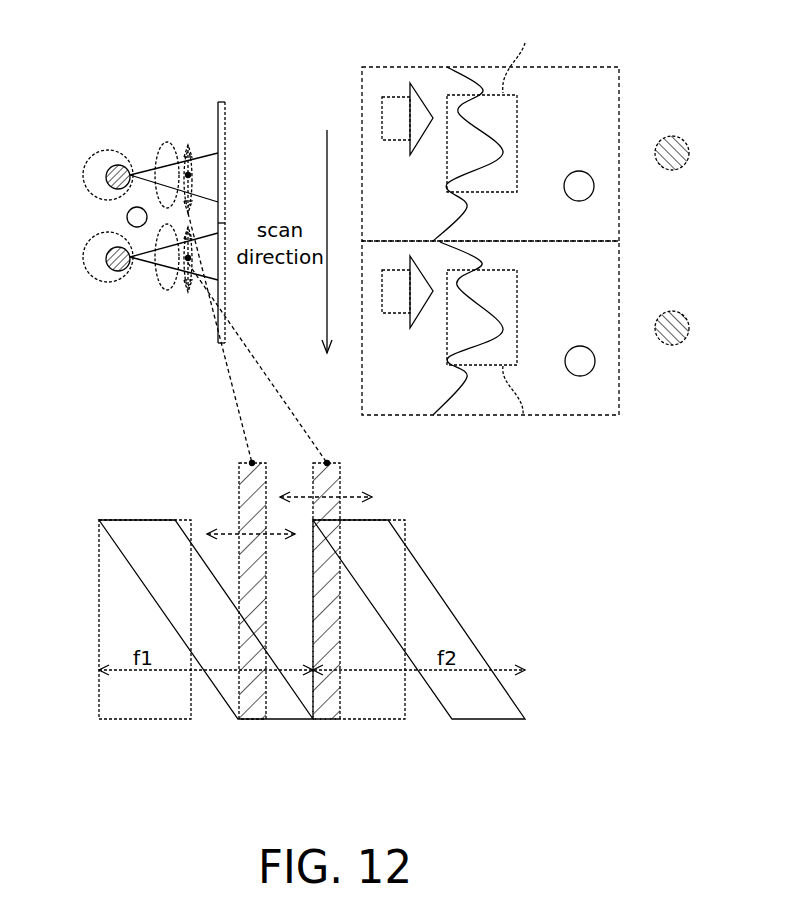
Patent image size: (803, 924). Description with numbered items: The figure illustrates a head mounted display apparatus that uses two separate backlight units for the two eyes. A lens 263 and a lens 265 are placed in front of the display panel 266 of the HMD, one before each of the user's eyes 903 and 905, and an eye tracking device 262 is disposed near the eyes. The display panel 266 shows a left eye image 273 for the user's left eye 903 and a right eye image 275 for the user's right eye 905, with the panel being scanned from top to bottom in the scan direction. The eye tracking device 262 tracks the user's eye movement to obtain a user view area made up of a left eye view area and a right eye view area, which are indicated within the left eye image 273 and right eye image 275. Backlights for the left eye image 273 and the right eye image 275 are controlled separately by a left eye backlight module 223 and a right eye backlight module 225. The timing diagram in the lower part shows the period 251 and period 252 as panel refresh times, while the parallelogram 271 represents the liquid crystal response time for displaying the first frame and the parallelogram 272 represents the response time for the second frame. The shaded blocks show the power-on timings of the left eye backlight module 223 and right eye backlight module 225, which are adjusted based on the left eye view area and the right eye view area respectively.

The left eye 903 is at (90, 157).
The right eye 905 is at (90, 280).
The eye tracking device 262 is at (127, 218).
The lens 263 is at (167, 142).
The lens 265 is at (167, 290).
The display panel 266 is at (223, 101).
The left eye image 273 is at (619, 113).
The right eye image 275 is at (619, 288).
The left eye backlight module 223 is at (689, 153).
The right eye backlight module 225 is at (689, 328).
The period 251 is at (143, 719).
The parallelogram 271 is at (237, 717).
The period 252 is at (373, 719).
The parallelogram 272 is at (443, 719).